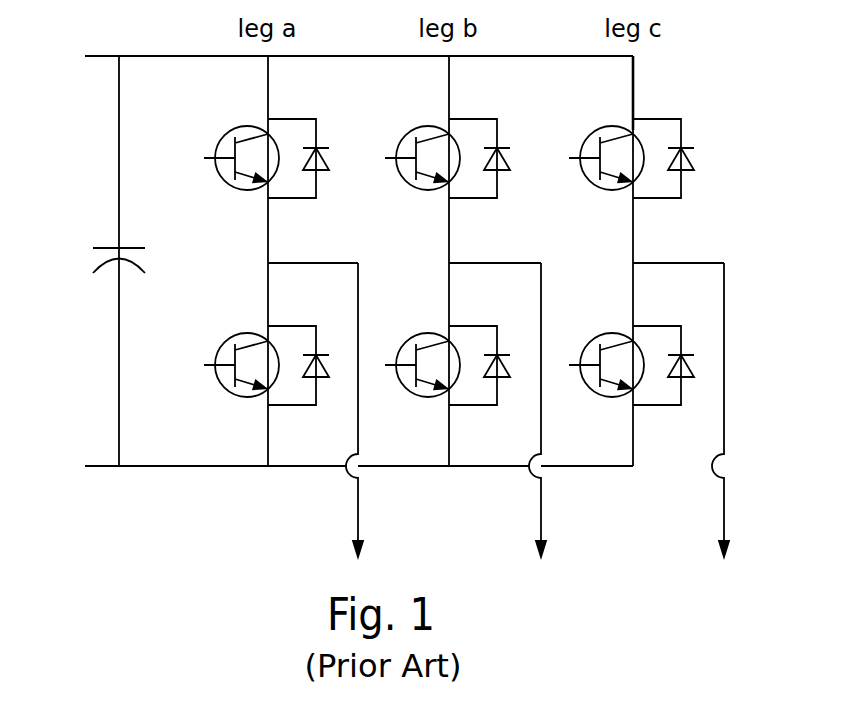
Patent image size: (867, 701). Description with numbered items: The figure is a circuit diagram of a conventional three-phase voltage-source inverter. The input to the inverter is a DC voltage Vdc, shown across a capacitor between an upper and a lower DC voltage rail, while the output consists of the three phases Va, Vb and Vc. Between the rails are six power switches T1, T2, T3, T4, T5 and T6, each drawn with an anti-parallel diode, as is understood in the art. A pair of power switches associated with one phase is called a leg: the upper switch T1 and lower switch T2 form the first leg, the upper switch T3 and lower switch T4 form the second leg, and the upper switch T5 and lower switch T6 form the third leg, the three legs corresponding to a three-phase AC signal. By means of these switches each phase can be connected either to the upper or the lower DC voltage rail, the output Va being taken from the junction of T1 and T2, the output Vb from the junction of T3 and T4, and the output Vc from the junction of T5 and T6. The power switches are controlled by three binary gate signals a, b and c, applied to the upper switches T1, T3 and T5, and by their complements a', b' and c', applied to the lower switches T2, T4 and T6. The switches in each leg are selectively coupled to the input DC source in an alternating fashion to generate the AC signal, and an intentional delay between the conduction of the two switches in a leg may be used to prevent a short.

The power switch T1 is at (266, 145).
The power switch T2 is at (266, 352).
The power switch T3 is at (447, 145).
The power switch T4 is at (447, 352).
The power switch T5 is at (631, 145).
The power switch T6 is at (631, 352).
The binary gate signal a is at (207, 174).
The complement gate signal a' is at (205, 379).
The binary gate signal b is at (392, 174).
The complement gate signal b' is at (389, 379).
The binary gate signal c is at (574, 174).
The complement gate signal c' is at (574, 379).
The output phase Va is at (336, 410).
The output phase Vb is at (517, 410).
The output phase Vc is at (697, 410).
The DC voltage Vdc is at (91, 243).